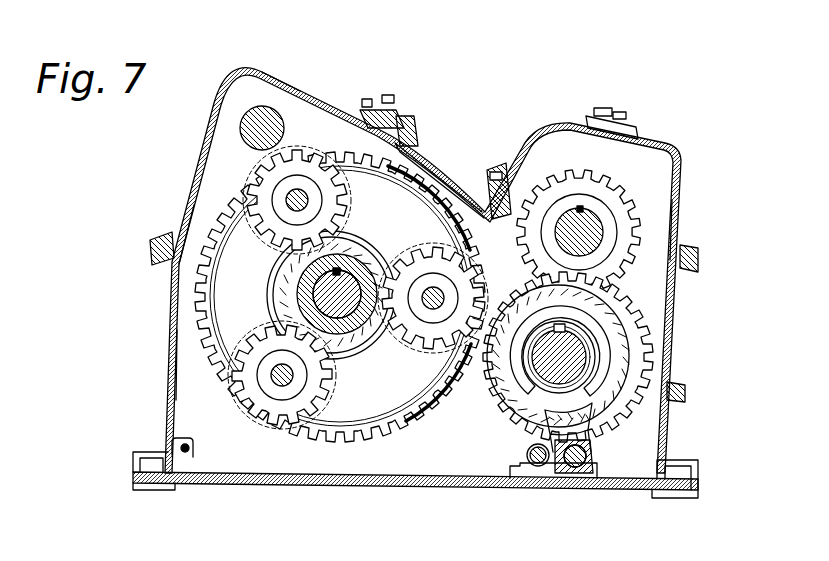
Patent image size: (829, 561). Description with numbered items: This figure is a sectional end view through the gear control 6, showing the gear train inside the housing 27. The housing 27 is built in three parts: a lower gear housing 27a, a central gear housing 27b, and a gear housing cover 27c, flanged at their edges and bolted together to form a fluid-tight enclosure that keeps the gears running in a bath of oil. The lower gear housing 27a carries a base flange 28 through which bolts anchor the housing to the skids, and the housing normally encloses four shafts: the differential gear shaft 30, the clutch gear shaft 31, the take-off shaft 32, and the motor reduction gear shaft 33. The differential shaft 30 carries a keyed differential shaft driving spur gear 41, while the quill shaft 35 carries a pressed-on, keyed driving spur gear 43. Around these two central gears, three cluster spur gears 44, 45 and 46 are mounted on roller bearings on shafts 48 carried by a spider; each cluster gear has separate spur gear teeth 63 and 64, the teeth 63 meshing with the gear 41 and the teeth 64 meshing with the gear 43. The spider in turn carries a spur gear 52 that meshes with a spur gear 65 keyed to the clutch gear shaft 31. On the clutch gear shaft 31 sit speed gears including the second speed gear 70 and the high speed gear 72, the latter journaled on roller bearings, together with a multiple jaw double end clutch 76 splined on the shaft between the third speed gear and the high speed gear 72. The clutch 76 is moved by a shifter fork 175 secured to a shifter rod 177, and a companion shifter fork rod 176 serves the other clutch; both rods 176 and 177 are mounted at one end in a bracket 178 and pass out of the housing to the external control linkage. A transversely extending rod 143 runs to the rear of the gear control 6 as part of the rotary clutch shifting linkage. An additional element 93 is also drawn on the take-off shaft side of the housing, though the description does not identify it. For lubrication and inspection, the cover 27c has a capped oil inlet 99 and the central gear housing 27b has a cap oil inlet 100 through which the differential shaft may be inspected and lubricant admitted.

The gear control 6 is at (286, 77).
The housing 27 is at (190, 181).
The lower gear housing 27a is at (175, 368).
The central gear housing 27b is at (182, 206).
The gear housing cover 27c is at (684, 232).
The base flange 28 is at (134, 459).
The differential gear shaft 30 is at (330, 292).
The clutch gear shaft 31 is at (581, 350).
The take-off shaft 32 is at (585, 236).
The motor reduction gear shaft 33 is at (250, 128).
The quill shaft 35 is at (352, 338).
The differential shaft driving spur gear 41 is at (300, 281).
The driving spur gear 43 is at (350, 255).
The cluster spur gear 44 is at (328, 199).
The cluster spur gear 45 is at (428, 262).
The cluster spur gear 46 is at (314, 405).
The shafts 48 is at (280, 214).
The spur gear 52 is at (410, 173).
The spur gear teeth 63 is at (350, 172).
The spur gear teeth 64 is at (248, 196).
The spur gear 65 is at (498, 412).
The second speed gear 70 is at (560, 330).
The high speed gear 72 is at (605, 312).
The multiple jaw double end clutch 76 is at (602, 398).
The gear 93 is at (598, 206).
The capped oil inlet 99 is at (622, 120).
The cap oil inlet 100 is at (385, 104).
The transversely extending rod 143 is at (191, 456).
The shifter fork 175 is at (596, 366).
The shifter fork rod 176 is at (526, 458).
The shifter rod 177 is at (594, 458).
The bracket 178 is at (546, 472).